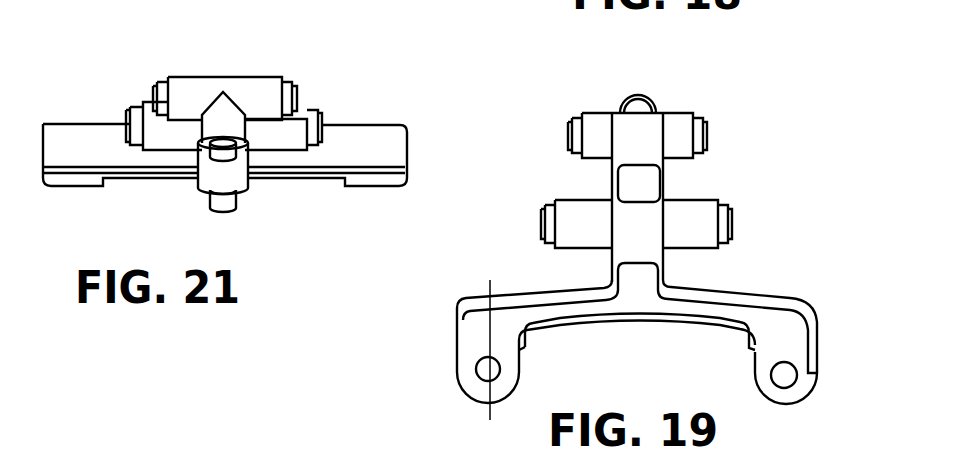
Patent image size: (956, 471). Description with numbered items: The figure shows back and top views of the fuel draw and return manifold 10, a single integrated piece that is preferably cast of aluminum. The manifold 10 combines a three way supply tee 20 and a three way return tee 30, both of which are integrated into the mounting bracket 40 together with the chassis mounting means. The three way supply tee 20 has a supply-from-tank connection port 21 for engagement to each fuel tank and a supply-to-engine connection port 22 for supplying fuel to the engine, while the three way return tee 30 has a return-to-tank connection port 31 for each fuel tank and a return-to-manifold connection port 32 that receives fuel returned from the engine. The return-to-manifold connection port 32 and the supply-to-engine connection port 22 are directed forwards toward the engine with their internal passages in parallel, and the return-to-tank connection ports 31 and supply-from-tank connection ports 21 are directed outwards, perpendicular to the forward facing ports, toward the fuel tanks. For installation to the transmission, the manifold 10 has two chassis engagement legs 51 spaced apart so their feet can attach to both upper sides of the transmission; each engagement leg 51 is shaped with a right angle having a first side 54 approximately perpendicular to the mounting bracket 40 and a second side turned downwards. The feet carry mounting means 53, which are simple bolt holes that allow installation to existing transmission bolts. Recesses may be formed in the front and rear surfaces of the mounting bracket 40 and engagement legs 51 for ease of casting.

In FIG. 21, the manifold 10 is at (253, 122).
In FIG. 19, the three way supply tee 20 is at (511, 280).
In FIG. 21, the supply-from-tank connection port 21 is at (168, 140).
In FIG. 19, the supply-from-tank connection port 21 is at (698, 197).
In FIG. 21, the supply-to-engine connection port 22 is at (239, 177).
In FIG. 21, the three way return tee 30 is at (230, 74).
In FIG. 21, the return-to-tank connection port 31 is at (197, 75).
In FIG. 19, the return-to-tank connection port 31 is at (685, 110).
In FIG. 21, the return-to-manifold connection port 32 is at (230, 118).
In FIG. 19, the return-to-manifold connection port 32 is at (634, 97).
In FIG. 19, the mounting bracket 40 is at (634, 228).
In FIG. 21, the chassis engagement legs 51 is at (59, 124).
In FIG. 19, the chassis engagement legs 51 is at (618, 310).
In FIG. 19, the mounting means 53 is at (497, 368).
In FIG. 19, the first side 54 is at (722, 293).